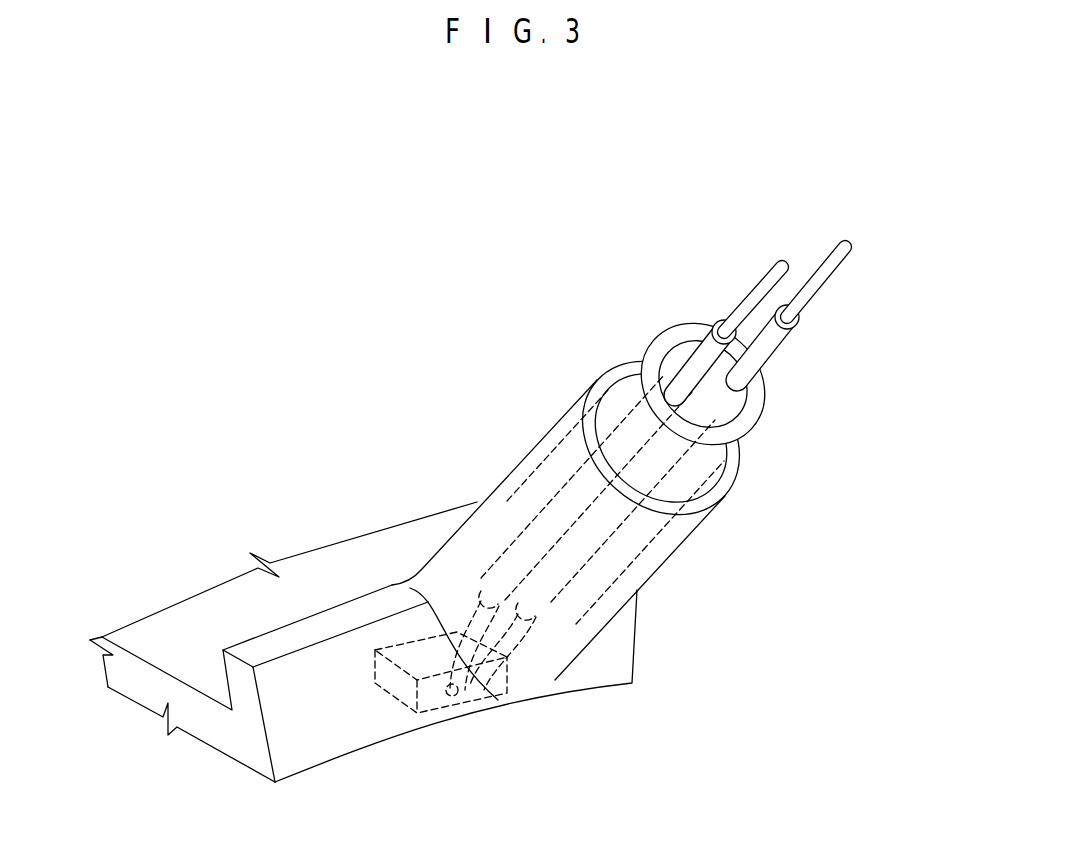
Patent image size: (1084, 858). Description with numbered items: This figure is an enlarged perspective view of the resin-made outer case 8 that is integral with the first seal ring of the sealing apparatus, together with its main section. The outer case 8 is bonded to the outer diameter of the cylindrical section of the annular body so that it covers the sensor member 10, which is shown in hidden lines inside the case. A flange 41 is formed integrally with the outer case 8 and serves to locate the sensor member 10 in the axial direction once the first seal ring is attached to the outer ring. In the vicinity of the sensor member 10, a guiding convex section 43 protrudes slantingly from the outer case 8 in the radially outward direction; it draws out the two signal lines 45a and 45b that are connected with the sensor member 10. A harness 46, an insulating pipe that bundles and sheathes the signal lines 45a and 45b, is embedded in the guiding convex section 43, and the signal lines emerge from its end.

The outer case 8 is at (206, 580).
The sensor member 10 is at (460, 703).
The flange 41 is at (324, 620).
The guiding convex section 43 is at (525, 460).
The signal line 45a is at (737, 397).
The signal line 45b is at (773, 341).
The harness 46 is at (717, 460).